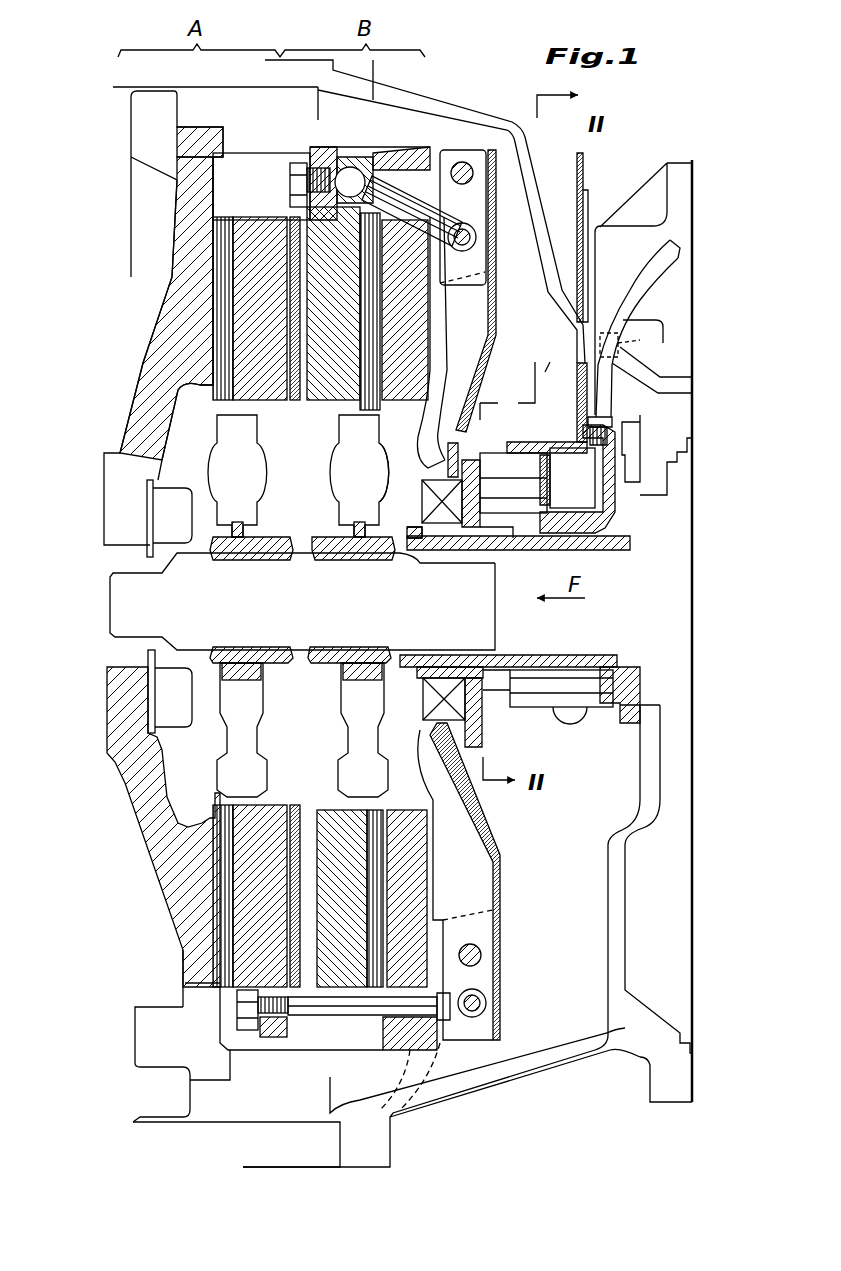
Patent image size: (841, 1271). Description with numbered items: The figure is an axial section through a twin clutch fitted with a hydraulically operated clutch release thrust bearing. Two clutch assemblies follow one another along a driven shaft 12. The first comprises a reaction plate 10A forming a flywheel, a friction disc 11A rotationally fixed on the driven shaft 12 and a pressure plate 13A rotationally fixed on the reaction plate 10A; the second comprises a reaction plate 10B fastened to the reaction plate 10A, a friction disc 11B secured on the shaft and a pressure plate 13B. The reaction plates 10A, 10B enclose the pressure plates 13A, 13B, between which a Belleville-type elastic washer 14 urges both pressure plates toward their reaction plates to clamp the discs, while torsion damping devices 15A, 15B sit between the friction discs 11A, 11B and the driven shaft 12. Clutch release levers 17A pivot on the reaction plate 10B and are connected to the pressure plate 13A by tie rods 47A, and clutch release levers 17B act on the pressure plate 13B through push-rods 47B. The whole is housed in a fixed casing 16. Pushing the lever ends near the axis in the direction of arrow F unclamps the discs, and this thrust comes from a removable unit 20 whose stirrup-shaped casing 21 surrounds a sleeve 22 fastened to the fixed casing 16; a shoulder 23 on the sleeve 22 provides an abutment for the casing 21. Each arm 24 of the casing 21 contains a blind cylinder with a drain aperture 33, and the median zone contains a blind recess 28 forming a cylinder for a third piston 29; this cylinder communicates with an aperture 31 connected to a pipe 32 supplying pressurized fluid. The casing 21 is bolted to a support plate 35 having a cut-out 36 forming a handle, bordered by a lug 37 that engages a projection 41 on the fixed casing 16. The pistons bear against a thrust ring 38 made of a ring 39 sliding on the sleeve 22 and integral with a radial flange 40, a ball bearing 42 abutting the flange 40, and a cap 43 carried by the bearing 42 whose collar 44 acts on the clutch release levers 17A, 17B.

The reaction plate 10A is at (163, 260).
The reaction plate 10B is at (422, 133).
The friction disc 11A is at (217, 300).
The friction disc 11B is at (377, 330).
The driven shaft 12 is at (328, 615).
The pressure plate 13A is at (243, 230).
The pressure plate 13B is at (342, 152).
The elastic washer 14 is at (297, 216).
The torsion damping device 15A is at (210, 455).
The torsion damping device 15B is at (330, 482).
The fixed casing 16 is at (469, 1096).
The clutch release levers 17A is at (512, 1020).
The clutch release levers 17B is at (500, 150).
The removable unit 20 is at (560, 377).
The casing 21 is at (538, 440).
The sleeve 22 is at (483, 545).
The shoulder 23 is at (593, 660).
The arm 24 is at (530, 695).
The blind recess 28 is at (618, 495).
The third piston 29 is at (498, 473).
The aperture 31 is at (612, 428).
The pipe 32 is at (657, 288).
The drain aperture 33 is at (580, 722).
The support plate 35 is at (580, 197).
The cut-out 36 is at (577, 193).
The lug 37 is at (630, 360).
The thrust ring 38 is at (418, 473).
The ring 39 is at (443, 550).
The radial flange 40 is at (513, 533).
The projection 41 is at (630, 344).
The ball bearing 42 is at (420, 510).
The cap 43 is at (380, 478).
The collar 44 is at (449, 415).
The tie rods 47A is at (317, 1003).
The push-rods 47B is at (422, 212).